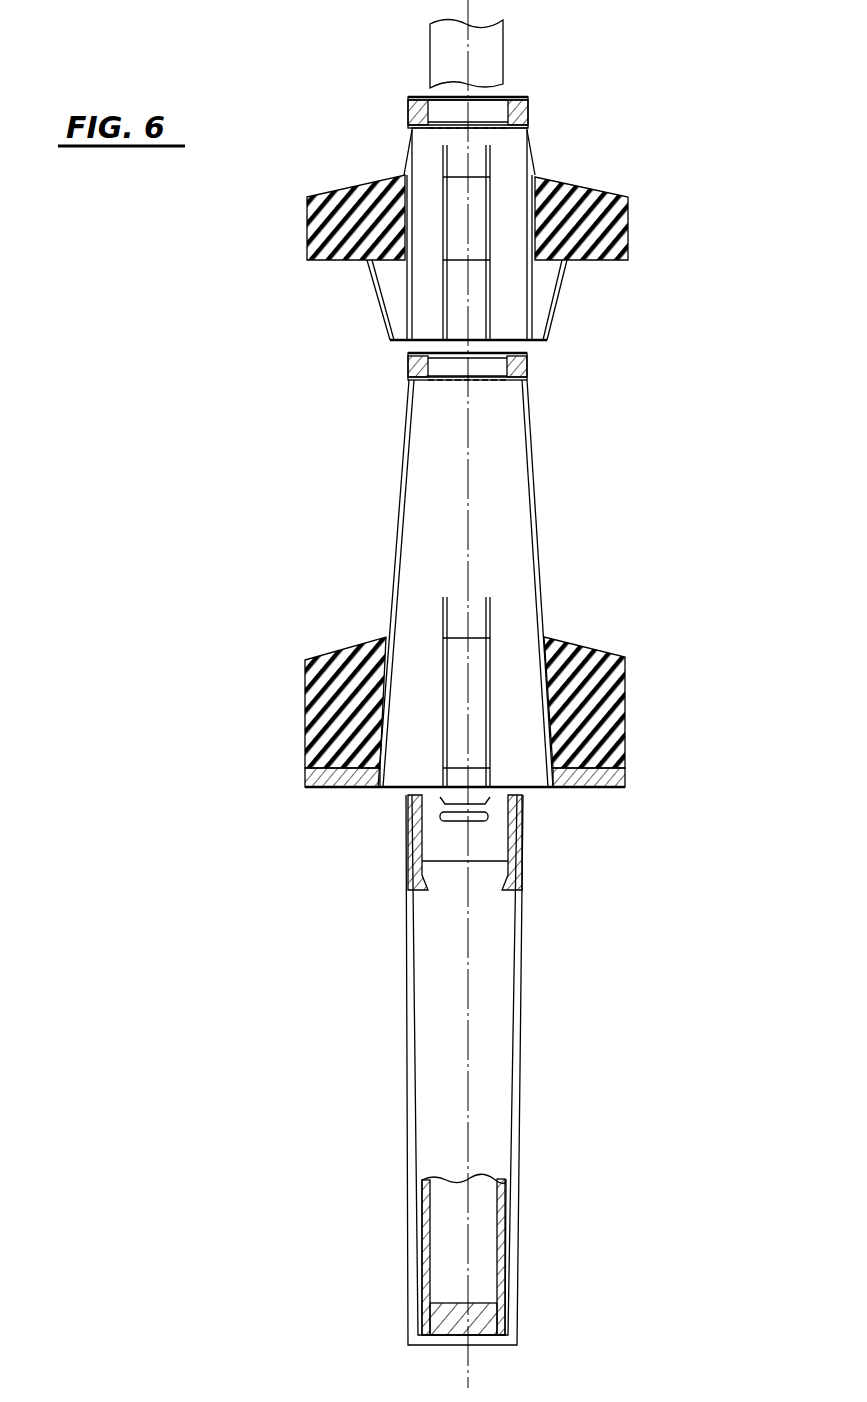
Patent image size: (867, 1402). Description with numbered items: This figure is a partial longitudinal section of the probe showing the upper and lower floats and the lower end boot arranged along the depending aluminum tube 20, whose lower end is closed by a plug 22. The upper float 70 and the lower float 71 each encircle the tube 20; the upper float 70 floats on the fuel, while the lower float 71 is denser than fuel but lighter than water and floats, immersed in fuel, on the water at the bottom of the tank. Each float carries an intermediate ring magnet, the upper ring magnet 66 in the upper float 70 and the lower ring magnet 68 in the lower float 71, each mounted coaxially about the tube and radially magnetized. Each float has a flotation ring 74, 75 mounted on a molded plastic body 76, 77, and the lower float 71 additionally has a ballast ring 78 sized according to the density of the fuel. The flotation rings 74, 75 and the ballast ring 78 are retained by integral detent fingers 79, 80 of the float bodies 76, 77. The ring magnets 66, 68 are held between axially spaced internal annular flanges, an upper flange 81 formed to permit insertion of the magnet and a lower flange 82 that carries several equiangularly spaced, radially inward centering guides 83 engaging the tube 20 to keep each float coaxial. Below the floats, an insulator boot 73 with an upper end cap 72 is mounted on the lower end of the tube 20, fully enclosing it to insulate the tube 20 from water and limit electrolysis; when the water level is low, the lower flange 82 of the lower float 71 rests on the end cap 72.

The tube 20 is at (501, 55).
The plug 22 is at (487, 1318).
The ring magnet 66 is at (528, 104).
The ring magnet 68 is at (527, 365).
The upper float 70 is at (600, 184).
The lower float 71 is at (605, 644).
The upper end cap 72 is at (522, 798).
The insulator boot 73 is at (527, 967).
The flotation ring 74 is at (628, 216).
The flotation ring 75 is at (610, 714).
The float body 76 is at (557, 305).
The float body 77 is at (538, 500).
The ballast ring 78 is at (623, 771).
The detent fingers 79 is at (405, 168).
The detent fingers 80 is at (477, 611).
The upper flange 81 is at (430, 97).
The lower flange 82 is at (415, 130).
The centering guides 83 is at (490, 129).